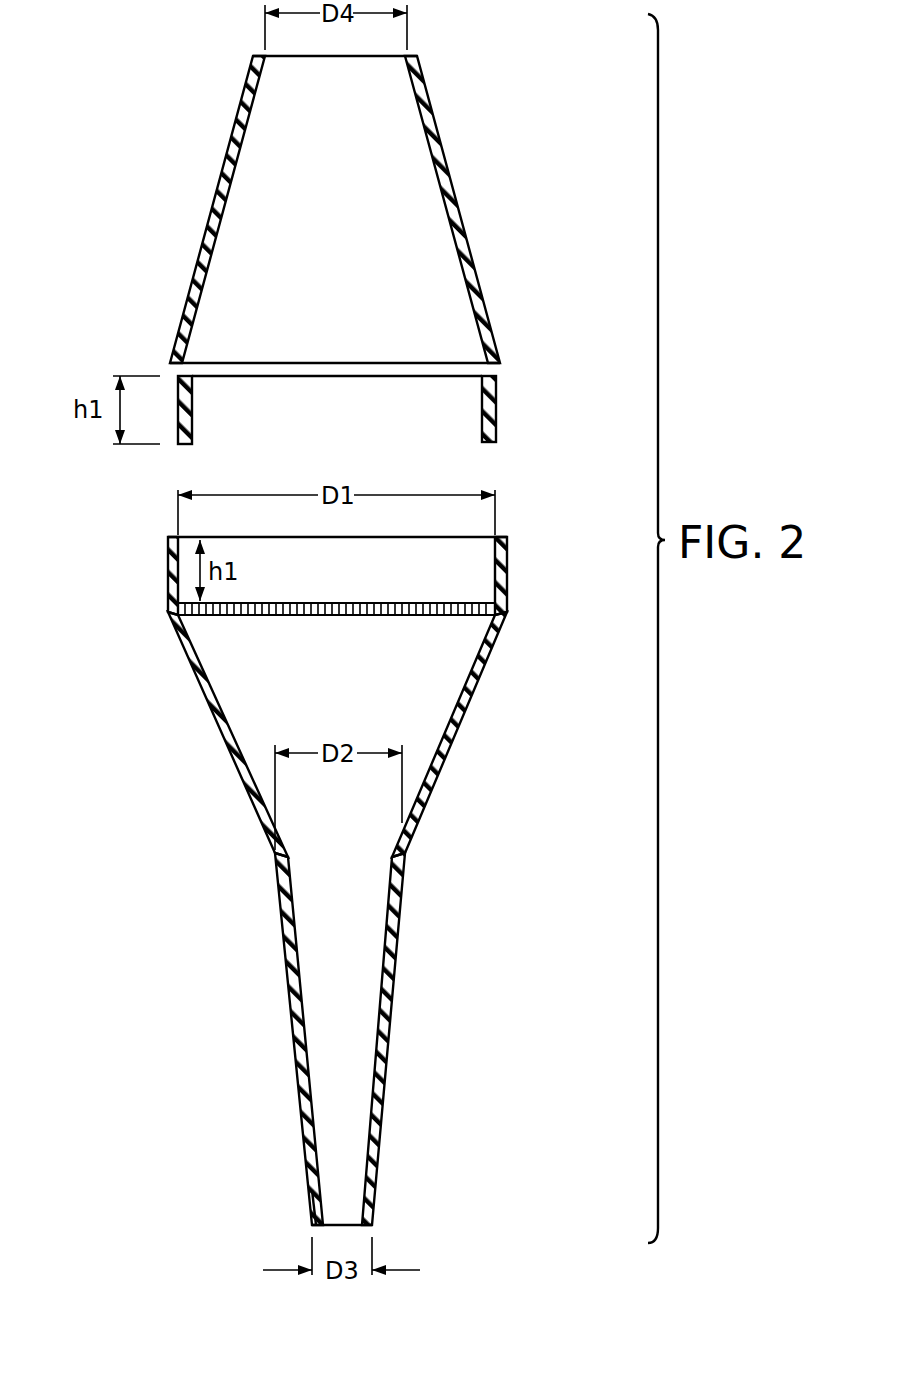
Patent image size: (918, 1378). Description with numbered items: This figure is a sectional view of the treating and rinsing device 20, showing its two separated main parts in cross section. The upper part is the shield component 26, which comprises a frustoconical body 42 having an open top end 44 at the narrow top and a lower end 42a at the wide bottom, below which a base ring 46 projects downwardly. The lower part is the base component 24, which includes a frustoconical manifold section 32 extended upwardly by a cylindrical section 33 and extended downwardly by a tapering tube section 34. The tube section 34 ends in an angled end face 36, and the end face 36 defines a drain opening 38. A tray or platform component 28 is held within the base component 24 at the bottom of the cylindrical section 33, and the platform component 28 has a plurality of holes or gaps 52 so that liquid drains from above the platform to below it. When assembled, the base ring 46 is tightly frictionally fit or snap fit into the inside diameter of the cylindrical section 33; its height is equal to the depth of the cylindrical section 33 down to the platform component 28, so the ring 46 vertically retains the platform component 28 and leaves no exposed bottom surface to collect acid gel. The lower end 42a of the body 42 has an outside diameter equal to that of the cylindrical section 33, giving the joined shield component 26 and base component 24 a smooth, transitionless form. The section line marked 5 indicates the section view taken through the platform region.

The treating and rinsing device 20 is at (547, 107).
The base component 24 is at (370, 884).
The shield component 26 is at (378, 250).
The platform component 28 is at (423, 603).
The frustoconical manifold section 32 is at (423, 808).
The cylindrical section 33 is at (507, 575).
The tapering tube section 34 is at (394, 992).
The angled end face 36 is at (350, 1226).
The drain opening 38 is at (320, 1198).
The frustoconical body 42 is at (432, 100).
The lower end 42a is at (500, 364).
The open top end 44 is at (410, 73).
The base ring 46 is at (496, 403).
The holes or gaps 52 is at (305, 603).
The section line 5- 5 is at (165, 595).